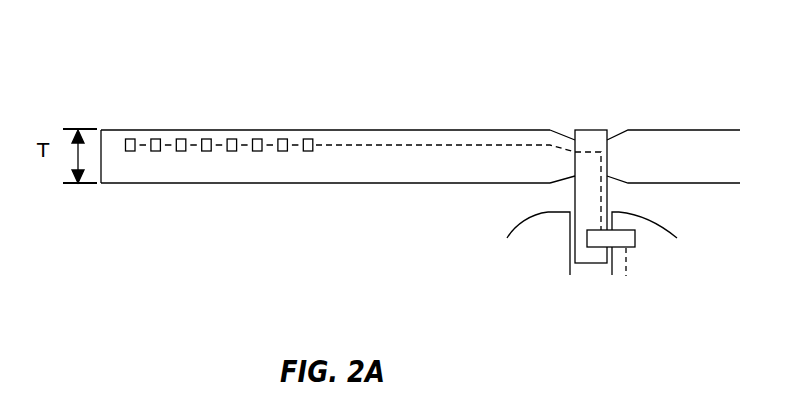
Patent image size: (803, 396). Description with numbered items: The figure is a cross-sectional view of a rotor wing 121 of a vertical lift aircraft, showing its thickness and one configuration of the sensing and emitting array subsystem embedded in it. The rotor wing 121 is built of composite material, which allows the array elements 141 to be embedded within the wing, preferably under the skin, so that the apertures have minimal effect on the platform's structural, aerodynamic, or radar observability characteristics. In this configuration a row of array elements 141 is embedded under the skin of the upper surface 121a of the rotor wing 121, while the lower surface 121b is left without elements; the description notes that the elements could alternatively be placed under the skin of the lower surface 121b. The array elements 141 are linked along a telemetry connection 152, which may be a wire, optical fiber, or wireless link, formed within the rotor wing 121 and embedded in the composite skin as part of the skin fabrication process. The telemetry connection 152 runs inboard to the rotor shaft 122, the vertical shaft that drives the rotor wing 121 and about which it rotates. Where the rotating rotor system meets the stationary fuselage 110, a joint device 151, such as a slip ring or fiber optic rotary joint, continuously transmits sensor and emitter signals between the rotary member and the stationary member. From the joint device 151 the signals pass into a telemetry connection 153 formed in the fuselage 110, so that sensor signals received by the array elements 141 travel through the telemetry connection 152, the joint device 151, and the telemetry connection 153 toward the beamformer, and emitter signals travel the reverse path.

The rotary wing 121 is at (152, 241).
The upper surface 121a is at (347, 130).
The lower surface 121b is at (347, 183).
The array elements 141 is at (128, 139).
The telemetry connection 152 is at (497, 144).
The rotor shaft 122 is at (588, 130).
The fuselage 110 is at (548, 213).
The joint device 151 is at (635, 242).
The telemetry connection 153 is at (627, 260).